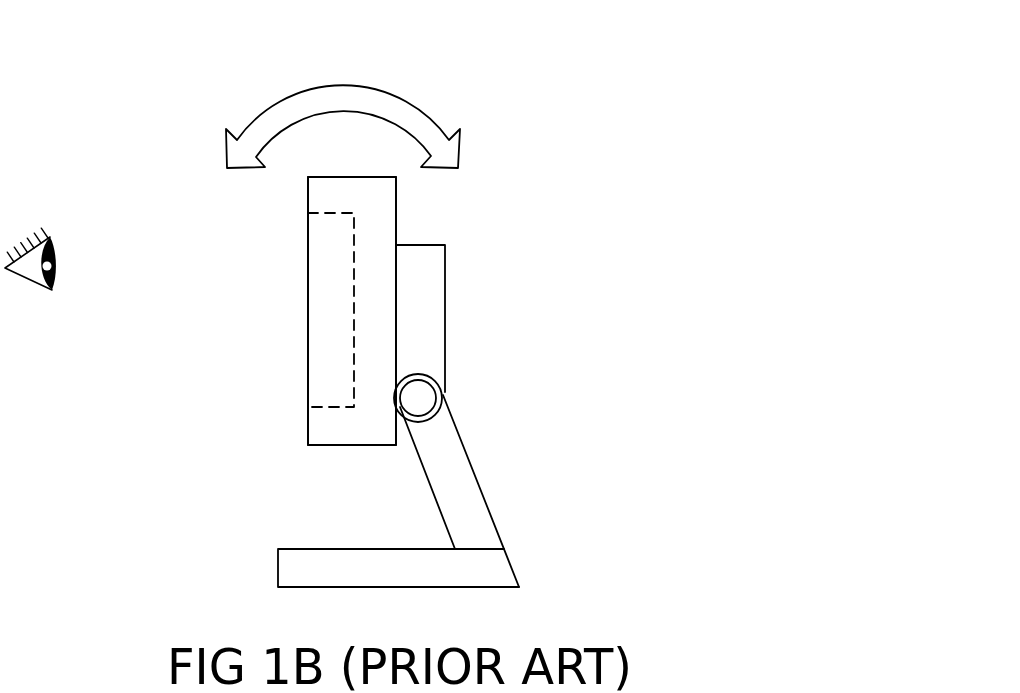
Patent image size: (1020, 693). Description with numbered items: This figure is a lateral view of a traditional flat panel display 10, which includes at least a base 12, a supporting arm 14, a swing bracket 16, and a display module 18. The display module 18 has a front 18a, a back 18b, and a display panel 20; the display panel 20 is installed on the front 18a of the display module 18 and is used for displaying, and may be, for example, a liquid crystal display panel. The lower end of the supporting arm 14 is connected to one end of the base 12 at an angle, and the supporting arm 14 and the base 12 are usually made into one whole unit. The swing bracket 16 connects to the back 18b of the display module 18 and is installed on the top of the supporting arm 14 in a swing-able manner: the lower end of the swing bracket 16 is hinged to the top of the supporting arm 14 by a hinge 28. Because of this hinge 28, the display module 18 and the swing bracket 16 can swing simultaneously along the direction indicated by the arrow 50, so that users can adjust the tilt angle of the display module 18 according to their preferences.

The flat panel display 10 is at (582, 163).
The base 12 is at (495, 575).
The supporting arm 14 is at (470, 505).
The swing bracket 16 is at (430, 318).
The display module 18 is at (320, 440).
The front 18a is at (308, 200).
The back 18b is at (397, 290).
The display panel 20 is at (325, 350).
The hinge 28 is at (432, 402).
The arrow 50 is at (392, 105).